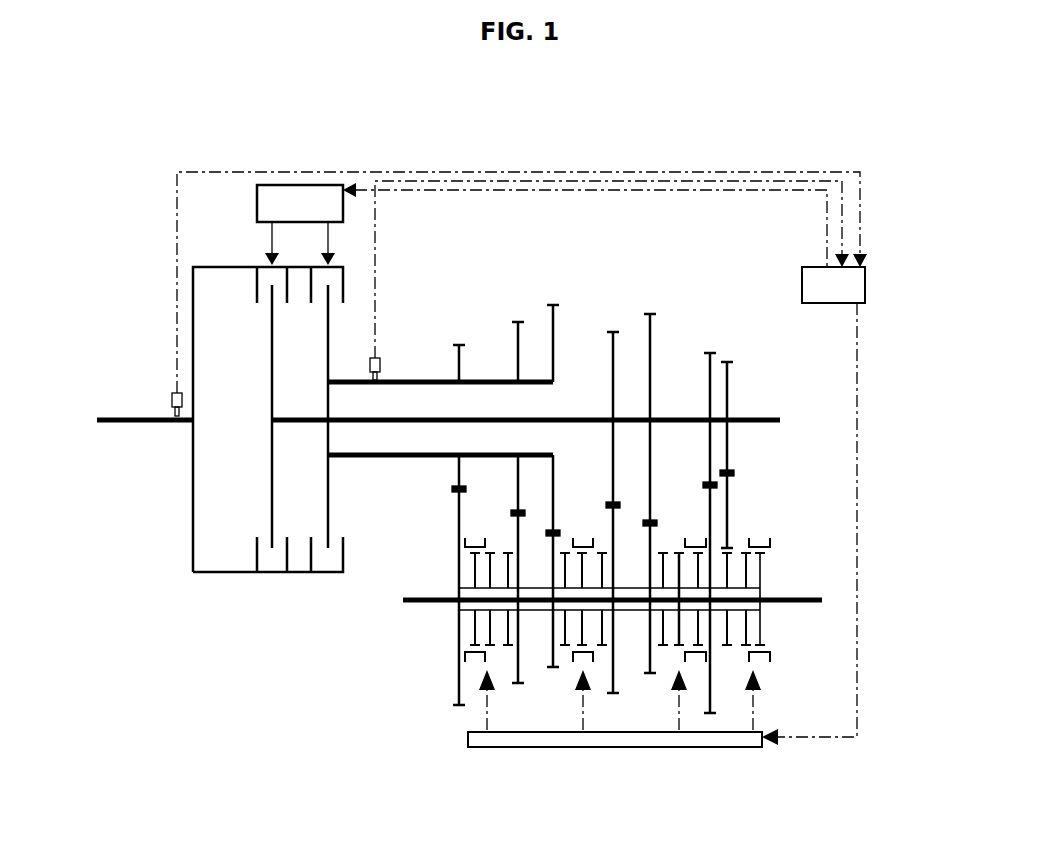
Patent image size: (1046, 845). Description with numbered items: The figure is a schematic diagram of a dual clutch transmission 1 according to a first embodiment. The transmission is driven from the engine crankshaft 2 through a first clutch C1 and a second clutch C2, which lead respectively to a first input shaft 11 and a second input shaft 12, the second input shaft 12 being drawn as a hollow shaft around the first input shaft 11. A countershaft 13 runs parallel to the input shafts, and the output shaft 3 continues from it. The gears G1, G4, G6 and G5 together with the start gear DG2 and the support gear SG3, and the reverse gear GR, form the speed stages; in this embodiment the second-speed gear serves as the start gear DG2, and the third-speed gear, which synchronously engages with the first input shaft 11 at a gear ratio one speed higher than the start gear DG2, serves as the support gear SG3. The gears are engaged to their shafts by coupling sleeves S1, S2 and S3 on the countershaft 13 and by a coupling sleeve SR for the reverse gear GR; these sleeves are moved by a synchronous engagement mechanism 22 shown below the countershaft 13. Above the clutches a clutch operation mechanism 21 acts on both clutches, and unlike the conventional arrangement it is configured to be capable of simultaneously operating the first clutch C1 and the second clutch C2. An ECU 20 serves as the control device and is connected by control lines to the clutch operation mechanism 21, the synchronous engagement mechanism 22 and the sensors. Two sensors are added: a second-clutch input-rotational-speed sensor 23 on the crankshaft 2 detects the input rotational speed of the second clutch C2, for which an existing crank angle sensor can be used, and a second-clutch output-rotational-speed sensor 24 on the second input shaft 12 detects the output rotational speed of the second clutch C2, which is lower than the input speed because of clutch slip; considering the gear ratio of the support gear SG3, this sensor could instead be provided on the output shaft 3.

The dual clutch transmission 1 is at (882, 318).
The crankshaft 2 is at (97, 425).
The output shaft 3 is at (822, 597).
The first input shaft 11 is at (752, 417).
The second input shaft 12 is at (410, 380).
The countershaft 13 is at (403, 600).
The ECU 20 is at (866, 273).
The clutch operation mechanism 21 is at (282, 203).
The synchronous engagement mechanism 22 is at (480, 737).
The second-clutch input-rotational-speed sensor 23 is at (172, 397).
The second-clutch output-rotational-speed sensor 24 is at (368, 365).
The first clutch C1 is at (268, 341).
The second clutch C2 is at (324, 331).
The start gear DG2 is at (457, 341).
The gear G4 is at (517, 318).
The gear G6 is at (553, 301).
The support gear SG3 is at (611, 329).
The gear G5 is at (650, 311).
The gear G1 is at (709, 350).
The gear GR is at (726, 359).
The coupling sleeve S1 is at (685, 630).
The coupling sleeve S2 is at (490, 630).
The coupling sleeve S3 is at (588, 633).
The coupling sleeve SR is at (758, 637).